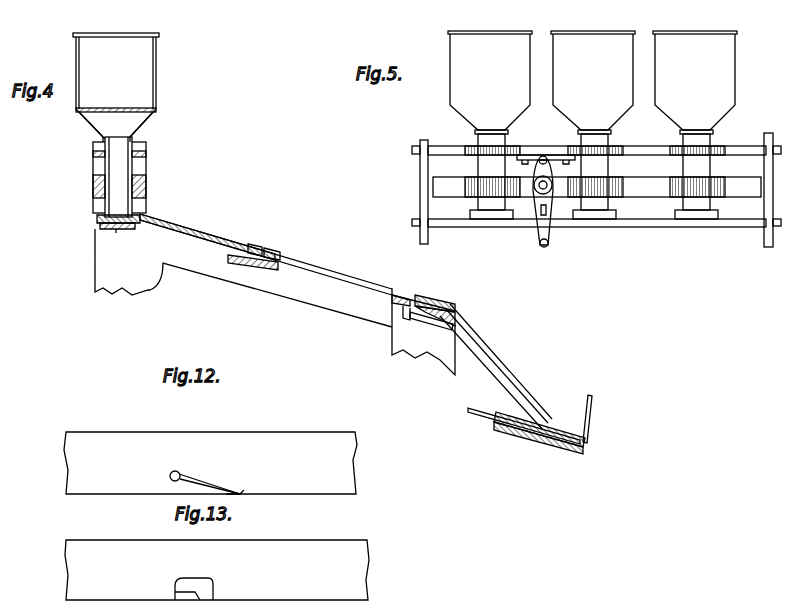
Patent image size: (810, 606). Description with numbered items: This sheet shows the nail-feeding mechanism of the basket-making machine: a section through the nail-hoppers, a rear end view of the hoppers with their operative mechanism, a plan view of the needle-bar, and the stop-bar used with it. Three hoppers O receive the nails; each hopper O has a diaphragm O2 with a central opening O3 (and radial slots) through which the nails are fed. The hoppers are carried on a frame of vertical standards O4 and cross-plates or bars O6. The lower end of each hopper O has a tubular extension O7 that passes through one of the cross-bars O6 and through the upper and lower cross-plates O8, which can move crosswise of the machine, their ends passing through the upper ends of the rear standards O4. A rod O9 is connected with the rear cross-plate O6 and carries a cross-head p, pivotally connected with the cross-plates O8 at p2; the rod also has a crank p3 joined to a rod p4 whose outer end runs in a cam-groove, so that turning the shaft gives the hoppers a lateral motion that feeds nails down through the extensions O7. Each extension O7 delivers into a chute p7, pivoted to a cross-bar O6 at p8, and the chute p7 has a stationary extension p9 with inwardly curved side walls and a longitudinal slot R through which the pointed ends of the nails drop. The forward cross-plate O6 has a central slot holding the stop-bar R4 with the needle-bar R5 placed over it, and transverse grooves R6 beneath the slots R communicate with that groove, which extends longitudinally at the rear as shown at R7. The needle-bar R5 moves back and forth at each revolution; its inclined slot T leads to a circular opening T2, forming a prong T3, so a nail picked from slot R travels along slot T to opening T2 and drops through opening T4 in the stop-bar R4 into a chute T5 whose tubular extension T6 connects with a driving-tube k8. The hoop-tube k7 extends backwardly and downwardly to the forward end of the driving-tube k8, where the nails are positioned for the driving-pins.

In FIG. 5, the hopper O is at (592, 82).
In FIG. 4, the diaphragm O2 is at (96, 110).
In FIG. 4, the central opening O3 is at (118, 110).
In FIG. 5, the vertical standard O4 is at (421, 183).
In FIG. 4, the cross-plate O6 is at (252, 264).
In FIG. 5, the cross-plate O6 is at (655, 185).
In FIG. 4, the tubular extension O7 is at (117, 165).
In FIG. 5, the tubular extension O7 is at (478, 147).
In FIG. 5, the cross-plate O8 is at (738, 146).
In FIG. 5, the rod O9 is at (536, 193).
In FIG. 5, the cross-head p is at (553, 165).
In FIG. 5, the pivotal connection p2 is at (532, 243).
In FIG. 5, the crank p3 is at (554, 232).
In FIG. 5, the rod p4 is at (550, 247).
In FIG. 4, the chute p7 is at (176, 234).
In FIG. 4, the pivotal connection p8 is at (253, 247).
In FIG. 4, the stationary extension p9 is at (278, 256).
In FIG. 4, the longitudinal slot R is at (343, 272).
In FIG. 4, the stop-bar R4 is at (455, 316).
In FIG. 13, the stop-bar R4 is at (217, 570).
In FIG. 4, the needle-bar R5 is at (455, 304).
In FIG. 12, the needle-bar R5 is at (210, 463).
In FIG. 4, the transverse groove R6 is at (386, 300).
In FIG. 4, the rear longitudinal extension of groove R7 is at (406, 320).
In FIG. 12, the inclined slot T is at (203, 480).
In FIG. 12, the circular opening T2 is at (172, 471).
In FIG. 12, the prong T3 is at (229, 486).
In FIG. 13, the opening T4 is at (200, 586).
In FIG. 4, the chute T5 is at (433, 330).
In FIG. 4, the tubular extension T6 is at (503, 382).
In FIG. 4, the hoop-tube k7 is at (590, 412).
In FIG. 4, the driving-tube k8 is at (520, 432).